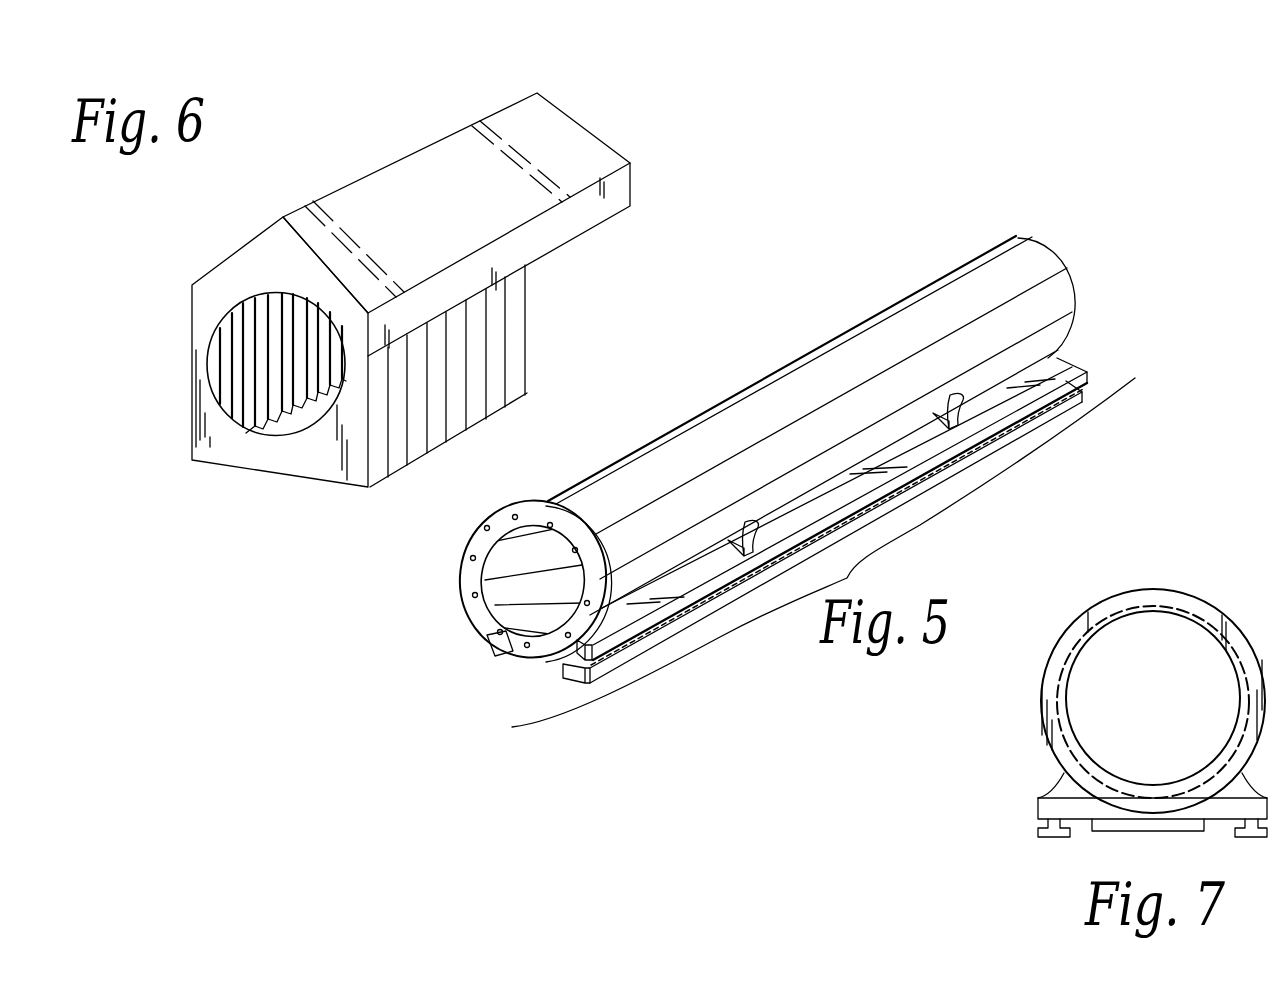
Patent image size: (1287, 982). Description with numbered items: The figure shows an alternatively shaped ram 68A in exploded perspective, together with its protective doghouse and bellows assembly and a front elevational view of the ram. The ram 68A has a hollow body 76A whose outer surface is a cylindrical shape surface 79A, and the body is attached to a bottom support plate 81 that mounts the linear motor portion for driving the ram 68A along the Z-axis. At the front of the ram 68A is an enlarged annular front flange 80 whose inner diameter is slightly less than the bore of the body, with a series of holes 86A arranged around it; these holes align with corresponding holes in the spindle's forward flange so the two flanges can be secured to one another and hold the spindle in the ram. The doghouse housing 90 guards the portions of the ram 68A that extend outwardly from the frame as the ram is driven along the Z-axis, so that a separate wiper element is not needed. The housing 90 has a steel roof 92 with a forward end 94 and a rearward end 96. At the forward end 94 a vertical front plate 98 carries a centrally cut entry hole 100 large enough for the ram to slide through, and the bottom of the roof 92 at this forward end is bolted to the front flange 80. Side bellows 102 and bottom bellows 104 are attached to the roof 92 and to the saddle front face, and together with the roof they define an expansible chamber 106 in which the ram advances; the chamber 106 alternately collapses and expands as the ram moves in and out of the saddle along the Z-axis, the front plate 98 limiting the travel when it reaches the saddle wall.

In FIG. 6, the doghouse housing 90 is at (345, 156).
In FIG. 6, the steel roof 92 is at (602, 146).
In FIG. 6, the forward end 94 is at (297, 215).
In FIG. 6, the rearward end 96 is at (490, 113).
In FIG. 6, the vertical front plate 98 is at (200, 301).
In FIG. 6, the entry hole 100 is at (247, 424).
In FIG. 6, the side bellows 102 is at (512, 330).
In FIG. 6, the bottom bellows 104 is at (294, 427).
In FIG. 6, the expansible chamber 106 is at (278, 348).
In FIG. 5, the ram 68A is at (809, 343).
In FIG. 5, the hollow body 76A is at (1056, 300).
In FIG. 7, the hollow body 76A is at (1152, 701).
In FIG. 5, the cylindrical shape surface 79A is at (728, 425).
In FIG. 5, the annular front flange 80 is at (494, 559).
In FIG. 5, the holes 86A is at (472, 556).
In FIG. 5, the bottom support plate 81 is at (512, 727).
In FIG. 7, the bottom support plate 81 is at (1052, 808).